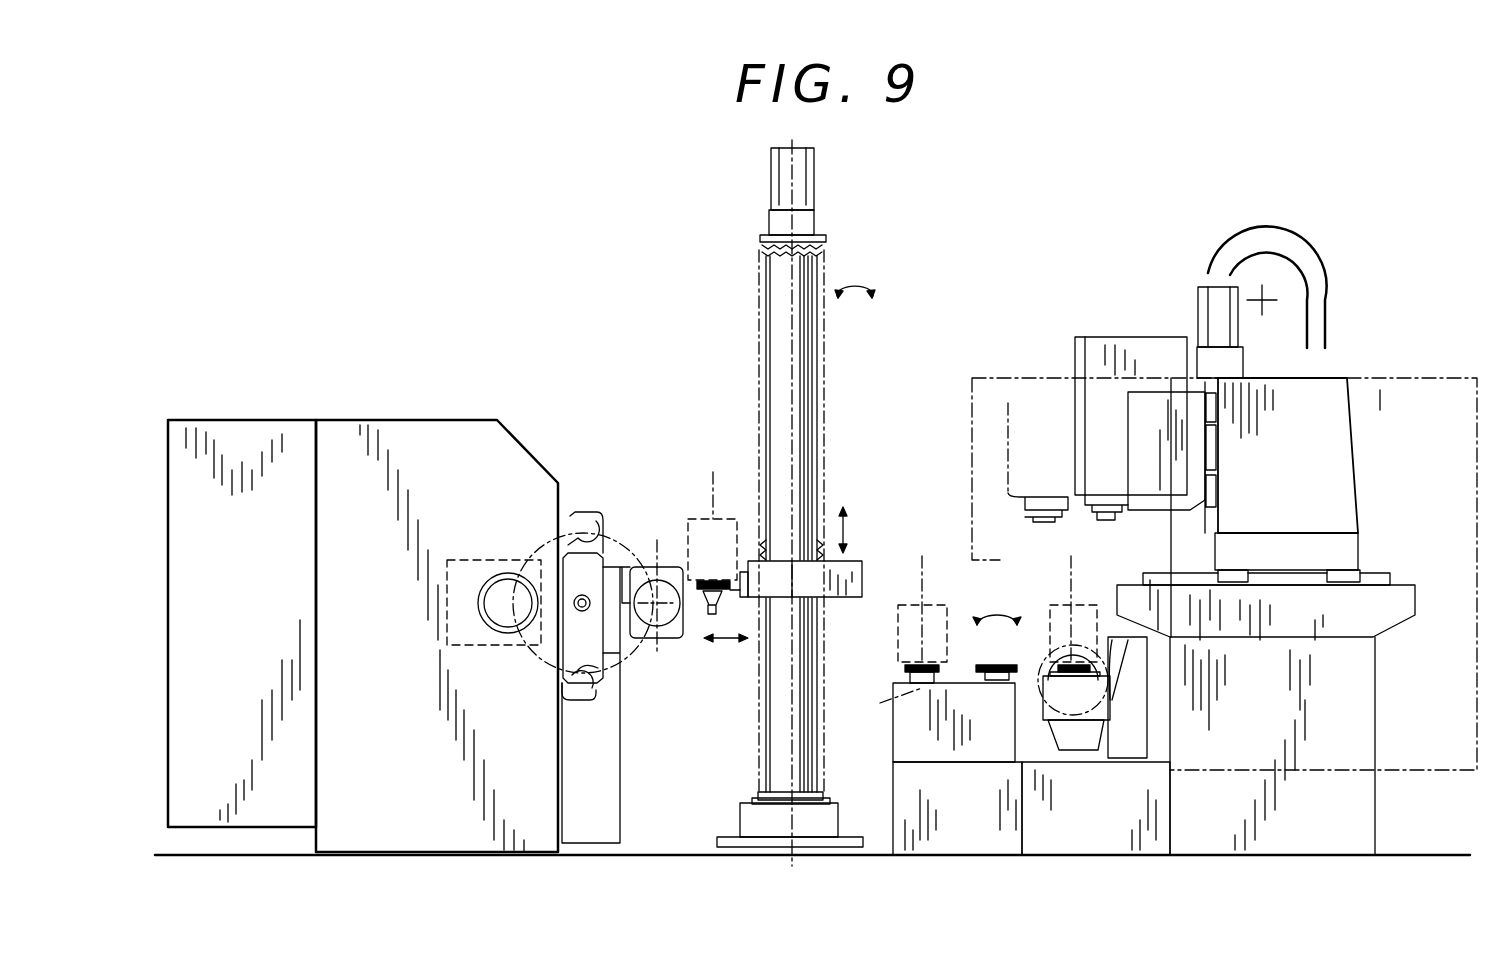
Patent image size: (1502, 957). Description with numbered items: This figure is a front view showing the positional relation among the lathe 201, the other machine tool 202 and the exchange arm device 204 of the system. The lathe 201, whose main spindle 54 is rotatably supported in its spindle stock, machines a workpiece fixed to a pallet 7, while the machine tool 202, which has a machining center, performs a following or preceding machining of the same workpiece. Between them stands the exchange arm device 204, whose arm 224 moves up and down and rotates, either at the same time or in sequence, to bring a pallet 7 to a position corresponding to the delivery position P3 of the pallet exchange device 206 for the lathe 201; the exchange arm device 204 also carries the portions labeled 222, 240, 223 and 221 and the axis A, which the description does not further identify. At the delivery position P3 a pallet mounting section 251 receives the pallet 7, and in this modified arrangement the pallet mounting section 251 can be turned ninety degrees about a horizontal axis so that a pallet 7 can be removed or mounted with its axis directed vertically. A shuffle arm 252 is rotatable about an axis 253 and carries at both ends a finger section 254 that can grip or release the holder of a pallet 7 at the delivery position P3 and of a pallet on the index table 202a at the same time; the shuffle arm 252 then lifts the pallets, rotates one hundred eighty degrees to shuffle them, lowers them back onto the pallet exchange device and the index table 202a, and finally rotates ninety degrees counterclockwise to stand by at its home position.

The lathe 201 is at (517, 431).
The pallet exchange device 206 is at (630, 665).
The finger section 254 is at (583, 512).
The axis 253 is at (575, 597).
The main spindle 54 is at (495, 583).
The shuffle arm 252 is at (594, 557).
The pallet mounting section 251 is at (667, 613).
The delivery position P3 is at (784, 626).
The pallet 7 is at (892, 553).
The arm 224 is at (858, 572).
The shaft top 222 is at (817, 222).
The column 240 is at (823, 365).
The exchange arm device 204 is at (838, 459).
The axis A is at (793, 399).
The base block 223 is at (846, 818).
The base plate 221 is at (828, 847).
The machine tool 202 is at (1327, 378).
The index table 202a is at (1085, 740).